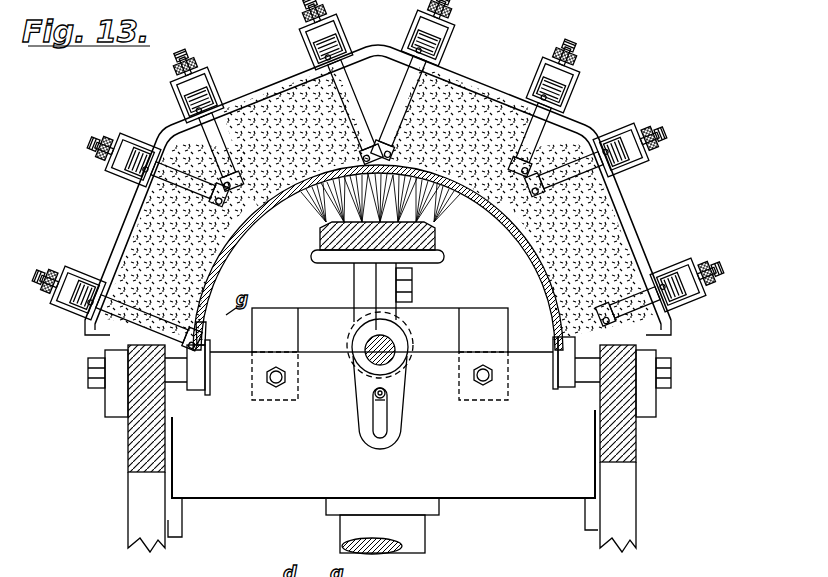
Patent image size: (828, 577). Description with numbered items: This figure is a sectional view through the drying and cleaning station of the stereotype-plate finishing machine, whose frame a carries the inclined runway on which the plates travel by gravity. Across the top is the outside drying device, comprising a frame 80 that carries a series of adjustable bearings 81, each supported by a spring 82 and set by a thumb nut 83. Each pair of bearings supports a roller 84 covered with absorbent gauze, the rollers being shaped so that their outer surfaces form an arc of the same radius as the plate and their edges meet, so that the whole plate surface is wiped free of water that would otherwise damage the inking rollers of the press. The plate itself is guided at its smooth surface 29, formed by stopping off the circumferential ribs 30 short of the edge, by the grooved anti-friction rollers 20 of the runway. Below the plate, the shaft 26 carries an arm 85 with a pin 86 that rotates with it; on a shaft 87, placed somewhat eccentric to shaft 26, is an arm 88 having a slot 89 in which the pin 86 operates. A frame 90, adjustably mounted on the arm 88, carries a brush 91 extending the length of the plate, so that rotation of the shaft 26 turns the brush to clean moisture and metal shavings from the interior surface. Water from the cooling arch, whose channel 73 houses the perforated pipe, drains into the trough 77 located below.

The frame 80 is at (470, 80).
The adjustable bearings 81 is at (402, 82).
The springs 82 is at (225, 92).
The thumb nuts 83 is at (200, 45).
The roller 84 is at (286, 180).
The arm 85 is at (373, 402).
The pin 86 is at (372, 393).
The shaft 87 is at (392, 360).
The arm 88 is at (365, 445).
The slot 89 is at (388, 425).
The frame 90 is at (395, 279).
The brush 91 is at (420, 200).
The shaft 26 is at (402, 331).
The smooth surface 29 is at (208, 344).
The circumferential ribs 30 is at (207, 326).
The rollers 20 is at (196, 388).
The trough 77 is at (275, 500).
The channel 73 is at (410, 537).
The frame a is at (143, 509).